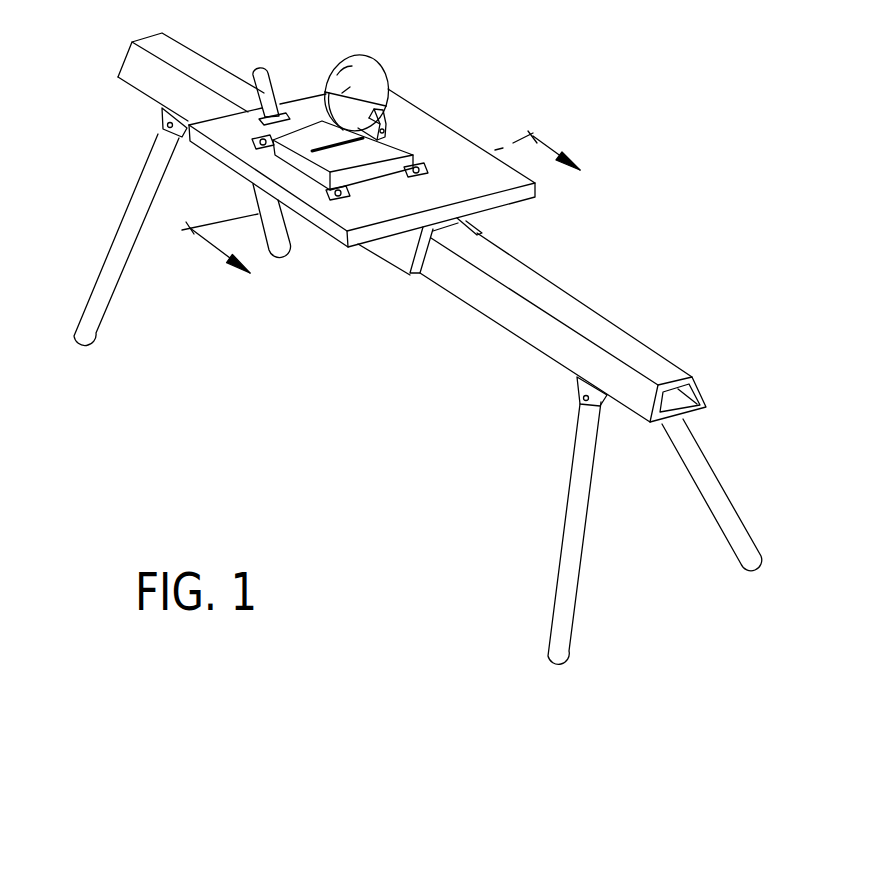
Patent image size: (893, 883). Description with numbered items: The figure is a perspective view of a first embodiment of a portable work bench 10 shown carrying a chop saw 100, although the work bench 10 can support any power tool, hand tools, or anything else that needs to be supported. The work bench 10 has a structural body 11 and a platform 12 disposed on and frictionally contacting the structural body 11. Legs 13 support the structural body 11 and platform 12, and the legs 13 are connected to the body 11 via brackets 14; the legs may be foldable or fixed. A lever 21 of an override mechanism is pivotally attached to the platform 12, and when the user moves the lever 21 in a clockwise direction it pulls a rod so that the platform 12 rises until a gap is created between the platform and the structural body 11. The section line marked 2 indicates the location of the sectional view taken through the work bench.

The portable work bench 10 is at (612, 252).
The structural body 11 is at (613, 340).
The platform 12 is at (423, 130).
The legs 13 is at (583, 472).
The brackets 14 is at (166, 117).
The lever 21 is at (257, 73).
The chop saw 100 is at (368, 85).
The section line of FIG. 2 is at (393, 216).